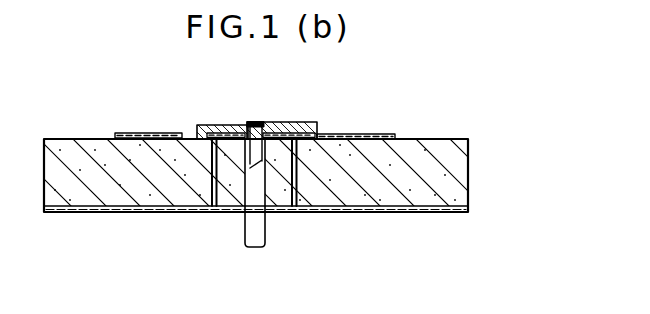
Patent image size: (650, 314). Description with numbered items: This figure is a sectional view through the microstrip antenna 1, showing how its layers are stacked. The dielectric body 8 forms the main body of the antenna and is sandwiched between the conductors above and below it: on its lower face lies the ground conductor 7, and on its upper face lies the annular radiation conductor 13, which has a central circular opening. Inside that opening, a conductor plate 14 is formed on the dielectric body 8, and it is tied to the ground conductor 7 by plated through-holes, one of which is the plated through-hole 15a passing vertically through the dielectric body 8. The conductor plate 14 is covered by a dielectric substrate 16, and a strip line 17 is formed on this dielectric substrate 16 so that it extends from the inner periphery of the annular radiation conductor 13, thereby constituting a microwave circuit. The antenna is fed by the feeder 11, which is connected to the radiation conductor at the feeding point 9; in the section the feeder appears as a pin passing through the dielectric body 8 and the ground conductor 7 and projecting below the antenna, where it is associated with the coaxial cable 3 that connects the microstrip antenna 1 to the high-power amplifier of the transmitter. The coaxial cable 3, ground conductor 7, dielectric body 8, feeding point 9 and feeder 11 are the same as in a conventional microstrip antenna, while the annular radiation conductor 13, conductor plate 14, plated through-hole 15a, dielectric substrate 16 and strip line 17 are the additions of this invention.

The microstrip antenna 1 is at (484, 138).
The coaxial cable 3 is at (260, 233).
The ground conductor 7 is at (412, 217).
The dielectric body 8 is at (438, 150).
The feeding point 9 is at (256, 121).
The feeder 11 is at (243, 127).
The annular radiation conductor 13 is at (372, 133).
The conductor plate 14 is at (215, 126).
The plated through-hole 15a is at (205, 180).
The dielectric substrate 16 is at (203, 125).
The strip line 17 is at (291, 122).